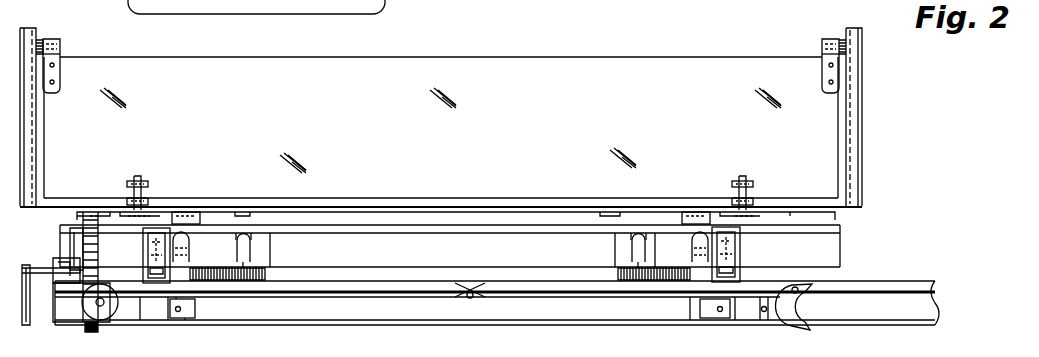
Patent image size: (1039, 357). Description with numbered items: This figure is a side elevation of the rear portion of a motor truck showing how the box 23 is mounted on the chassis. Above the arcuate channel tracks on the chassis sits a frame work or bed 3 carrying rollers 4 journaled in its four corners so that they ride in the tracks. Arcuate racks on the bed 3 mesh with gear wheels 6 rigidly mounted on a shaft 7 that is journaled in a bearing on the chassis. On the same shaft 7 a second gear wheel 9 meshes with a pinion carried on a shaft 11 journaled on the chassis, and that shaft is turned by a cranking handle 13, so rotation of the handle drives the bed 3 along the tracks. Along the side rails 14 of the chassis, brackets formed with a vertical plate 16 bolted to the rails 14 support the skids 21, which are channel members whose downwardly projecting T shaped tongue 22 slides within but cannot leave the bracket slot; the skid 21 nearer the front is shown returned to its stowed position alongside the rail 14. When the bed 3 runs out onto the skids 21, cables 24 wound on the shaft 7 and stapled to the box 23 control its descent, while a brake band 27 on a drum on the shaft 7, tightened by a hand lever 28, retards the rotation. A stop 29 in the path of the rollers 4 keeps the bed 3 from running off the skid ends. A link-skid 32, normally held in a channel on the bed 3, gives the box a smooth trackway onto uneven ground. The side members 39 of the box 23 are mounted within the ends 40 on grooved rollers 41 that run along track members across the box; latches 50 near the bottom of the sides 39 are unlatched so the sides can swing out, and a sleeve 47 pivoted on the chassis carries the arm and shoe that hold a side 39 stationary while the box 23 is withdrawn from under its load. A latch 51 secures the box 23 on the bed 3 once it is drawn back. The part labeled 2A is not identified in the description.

The bed 3 is at (3, 335).
The box 23 is at (492, 58).
The ends 40 is at (18, 130).
The rollers 41 is at (40, 42).
The side members 39 is at (441, 132).
The latch 51 is at (76, 216).
The latches 50 is at (141, 181).
The link-skid 32 is at (190, 214).
The sleeve 47 is at (343, 213).
The cranking handle 13 is at (30, 288).
The shaft 11 is at (40, 272).
The hand lever 28 is at (68, 259).
The brake band 27 is at (89, 212).
The second gear wheel 9 is at (99, 240).
The stop 29 is at (110, 318).
The rollers 4 is at (143, 258).
The gear wheels 6 is at (190, 270).
The shaft 2A is at (342, 226).
The cables 24 is at (637, 250).
The shaft 7 is at (332, 272).
The side rails 14 is at (392, 306).
The skids 21 is at (318, 293).
The T shaped tongue 22 is at (466, 298).
The vertical plate 16 is at (170, 312).